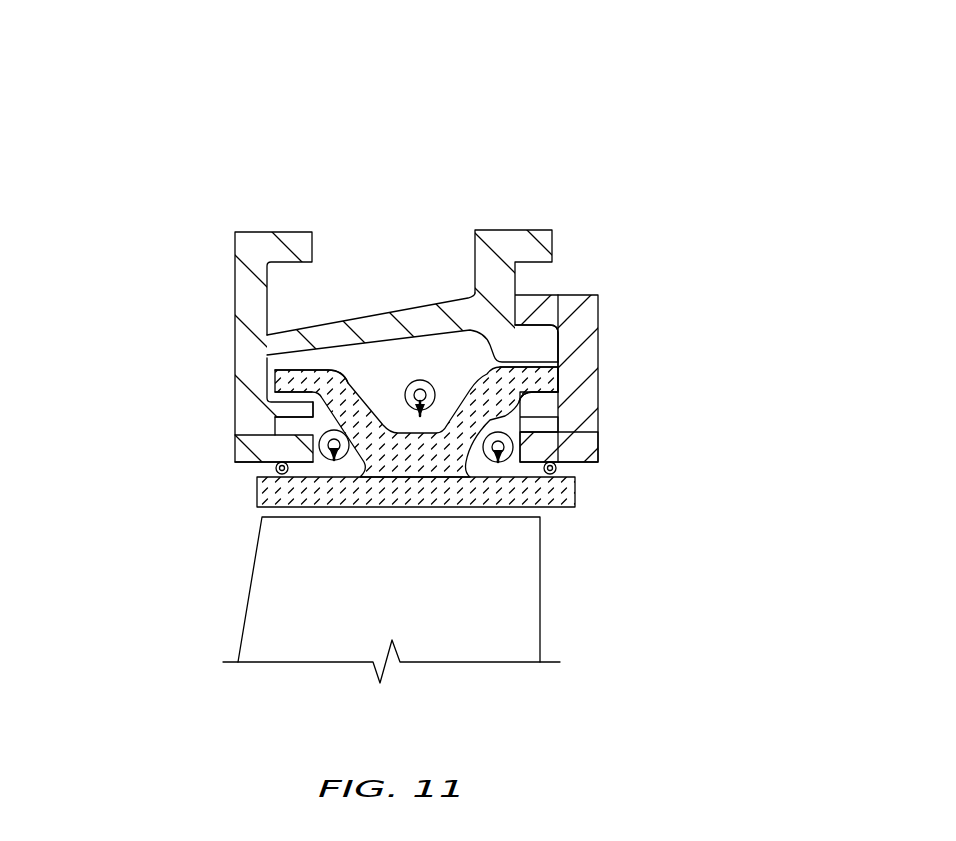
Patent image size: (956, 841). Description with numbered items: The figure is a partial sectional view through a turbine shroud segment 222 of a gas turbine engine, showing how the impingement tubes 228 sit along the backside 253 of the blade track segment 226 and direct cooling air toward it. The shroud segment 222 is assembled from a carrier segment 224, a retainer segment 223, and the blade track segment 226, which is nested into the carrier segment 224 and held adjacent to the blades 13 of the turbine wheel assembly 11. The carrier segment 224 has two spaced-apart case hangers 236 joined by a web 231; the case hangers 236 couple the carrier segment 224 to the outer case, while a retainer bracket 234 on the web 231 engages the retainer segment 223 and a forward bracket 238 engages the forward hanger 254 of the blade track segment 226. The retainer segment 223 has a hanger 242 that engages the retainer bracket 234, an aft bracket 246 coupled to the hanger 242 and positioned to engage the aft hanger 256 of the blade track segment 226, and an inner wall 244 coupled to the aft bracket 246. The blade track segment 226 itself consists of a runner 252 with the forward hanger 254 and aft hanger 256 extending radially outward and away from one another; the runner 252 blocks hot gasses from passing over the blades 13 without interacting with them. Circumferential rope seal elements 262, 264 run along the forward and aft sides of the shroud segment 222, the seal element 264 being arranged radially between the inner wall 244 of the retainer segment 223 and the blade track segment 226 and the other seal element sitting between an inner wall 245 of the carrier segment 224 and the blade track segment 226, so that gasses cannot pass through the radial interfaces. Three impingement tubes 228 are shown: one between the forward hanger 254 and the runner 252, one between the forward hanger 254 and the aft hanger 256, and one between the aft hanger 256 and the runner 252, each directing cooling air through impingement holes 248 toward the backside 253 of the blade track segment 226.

The turbine shroud segment 222 is at (180, 128).
The carrier segment 224 is at (210, 347).
The web 231 is at (385, 326).
The retainer segment 223 is at (628, 345).
The case hangers 236 is at (519, 245).
The forward bracket 238 is at (289, 408).
The retainer bracket 234 is at (541, 327).
The hanger 242 is at (596, 312).
The inner wall 244 is at (576, 441).
The inner wall 245 is at (266, 445).
The aft bracket 246 is at (545, 410).
The forward hanger 254 is at (304, 385).
The aft hanger 256 is at (546, 383).
The impingement holes 248 is at (322, 466).
The impingement tubes 228 is at (403, 414).
The blade track segment 226 is at (601, 487).
The circumferential seal element 262 is at (278, 489).
The circumferential seal element 264 is at (493, 490).
The backside 253 is at (282, 475).
The runner 252 is at (553, 477).
The turbine wheel assembly 11 is at (571, 617).
The blades 13 is at (520, 648).